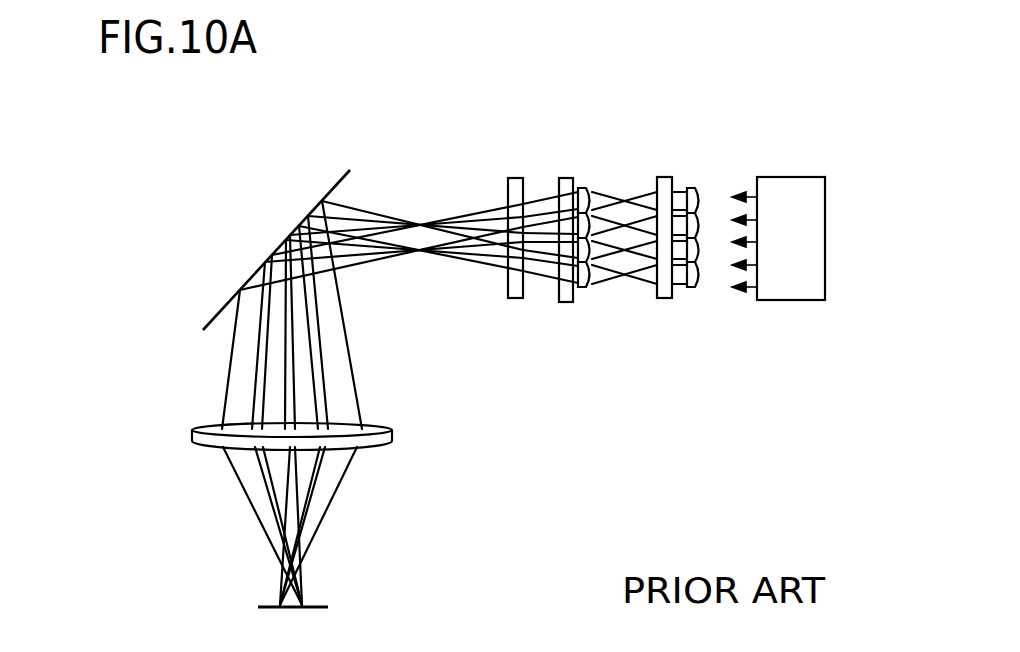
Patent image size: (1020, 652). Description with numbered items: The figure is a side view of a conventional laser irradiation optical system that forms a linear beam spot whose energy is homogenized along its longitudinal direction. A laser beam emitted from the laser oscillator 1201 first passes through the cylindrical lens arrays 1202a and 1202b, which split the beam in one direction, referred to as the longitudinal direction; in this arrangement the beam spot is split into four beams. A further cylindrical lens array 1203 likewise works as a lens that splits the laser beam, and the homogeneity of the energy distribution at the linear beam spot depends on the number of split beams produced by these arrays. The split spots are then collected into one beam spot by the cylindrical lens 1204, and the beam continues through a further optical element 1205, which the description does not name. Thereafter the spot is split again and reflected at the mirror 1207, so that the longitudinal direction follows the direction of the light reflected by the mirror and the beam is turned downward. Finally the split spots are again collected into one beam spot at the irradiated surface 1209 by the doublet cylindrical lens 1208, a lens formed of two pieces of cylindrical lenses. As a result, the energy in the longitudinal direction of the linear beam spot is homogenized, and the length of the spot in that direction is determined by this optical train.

The laser oscillator 1201 is at (787, 239).
The cylindrical lens array 1202a is at (762, 352).
The cylindrical lens array 1202b is at (575, 186).
The cylindrical lens array 1203 is at (669, 292).
The cylindrical lens 1204 is at (610, 321).
The condenser lens plate 1205 is at (541, 300).
The mirror 1207 is at (276, 235).
The doublet cylindrical lens 1208 is at (321, 489).
The irradiated surface 1209 is at (240, 561).